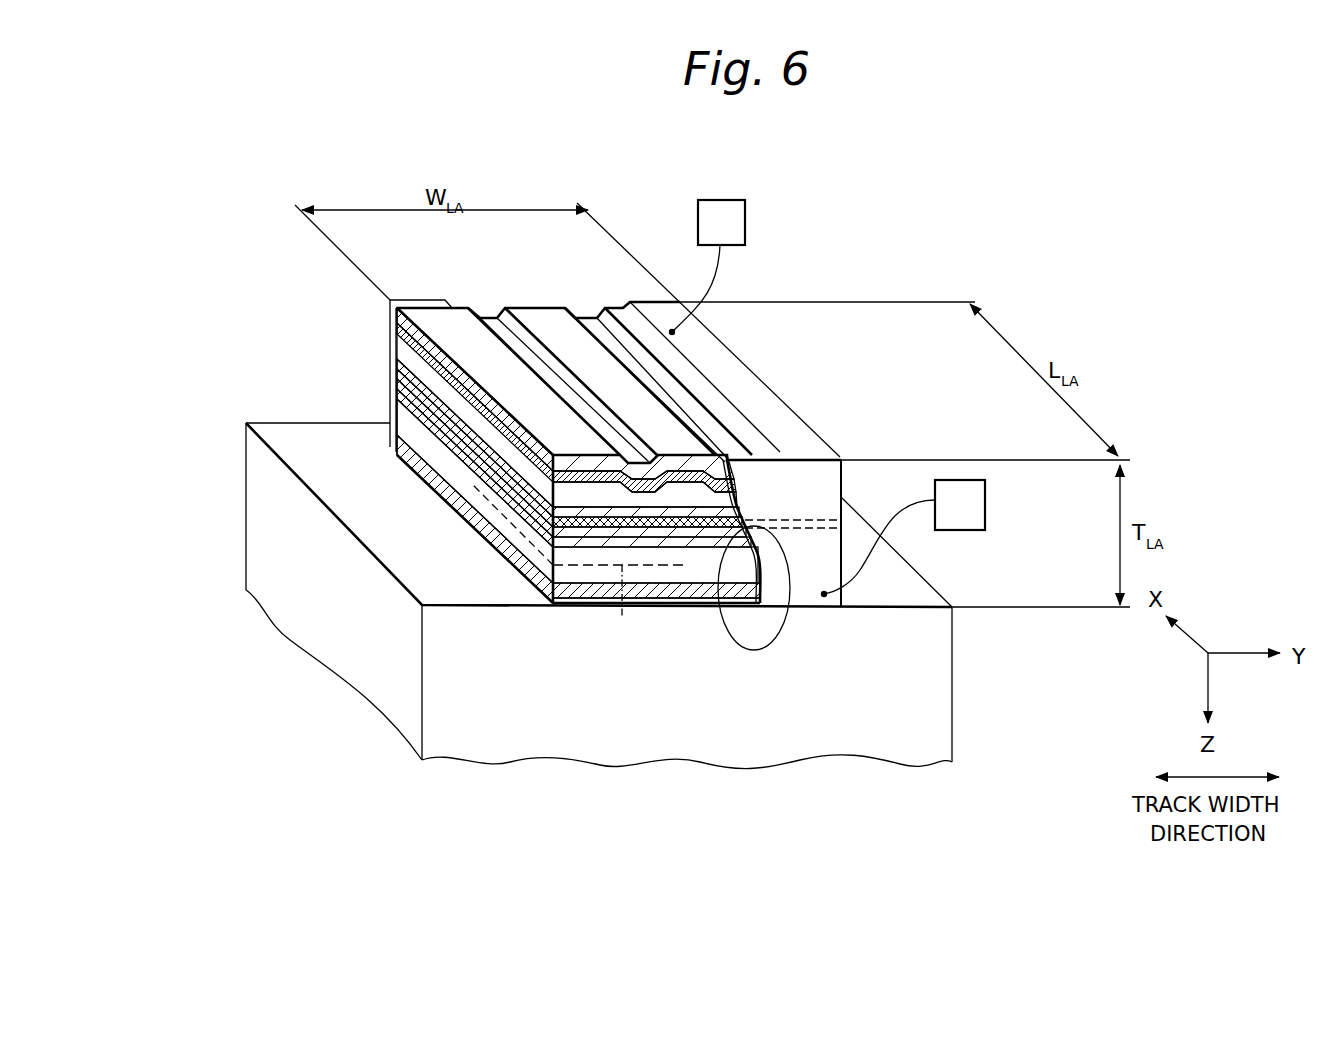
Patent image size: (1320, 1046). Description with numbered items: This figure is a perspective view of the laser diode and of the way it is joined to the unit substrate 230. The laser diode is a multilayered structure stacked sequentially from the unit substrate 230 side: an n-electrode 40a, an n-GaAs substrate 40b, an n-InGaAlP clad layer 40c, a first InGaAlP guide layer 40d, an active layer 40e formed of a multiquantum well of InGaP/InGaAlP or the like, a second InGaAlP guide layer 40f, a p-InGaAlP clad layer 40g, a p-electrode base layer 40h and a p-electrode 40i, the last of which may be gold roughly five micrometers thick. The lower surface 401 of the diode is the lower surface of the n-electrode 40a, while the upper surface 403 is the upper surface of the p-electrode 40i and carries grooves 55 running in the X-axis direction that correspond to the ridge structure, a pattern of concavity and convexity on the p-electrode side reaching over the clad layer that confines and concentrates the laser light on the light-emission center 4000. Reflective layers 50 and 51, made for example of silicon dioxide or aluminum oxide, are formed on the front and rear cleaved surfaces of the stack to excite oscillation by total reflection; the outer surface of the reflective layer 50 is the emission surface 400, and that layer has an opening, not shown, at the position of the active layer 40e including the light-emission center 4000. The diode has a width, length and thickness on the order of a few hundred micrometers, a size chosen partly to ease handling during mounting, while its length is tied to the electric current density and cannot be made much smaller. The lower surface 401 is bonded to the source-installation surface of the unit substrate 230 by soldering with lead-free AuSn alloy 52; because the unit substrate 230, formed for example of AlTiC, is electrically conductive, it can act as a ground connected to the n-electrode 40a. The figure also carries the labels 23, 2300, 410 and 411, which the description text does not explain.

The thin-film magnetic head element 23 is at (975, 242).
The n-electrode 40a is at (467, 510).
The n-GaAs substrate 40b is at (450, 465).
The n-InGaAlP clad layer 40c is at (397, 450).
The first InGaAlP guide layer 40d is at (397, 430).
The active layer 40e is at (412, 392).
The second InGaAlP guide layer 40f is at (428, 373).
The p-InGaAlP clad layer 40g is at (420, 360).
The p-electrode base layer 40h is at (410, 345).
The p-electrode 40i is at (400, 330).
The reflective layer 50 is at (820, 487).
The reflective layer 51 is at (418, 300).
The AuSn alloy 52 is at (497, 547).
The grooves 55 is at (597, 313).
The unit substrate 230 is at (935, 673).
The substrate front surface 2300 is at (805, 723).
The emission surface 400 is at (810, 565).
The lower surface 401 is at (622, 617).
The upper surface 403 is at (728, 377).
The terminal electrode 410 is at (962, 505).
The terminal electrode 411 is at (718, 212).
The light-emission center 4000 is at (680, 530).